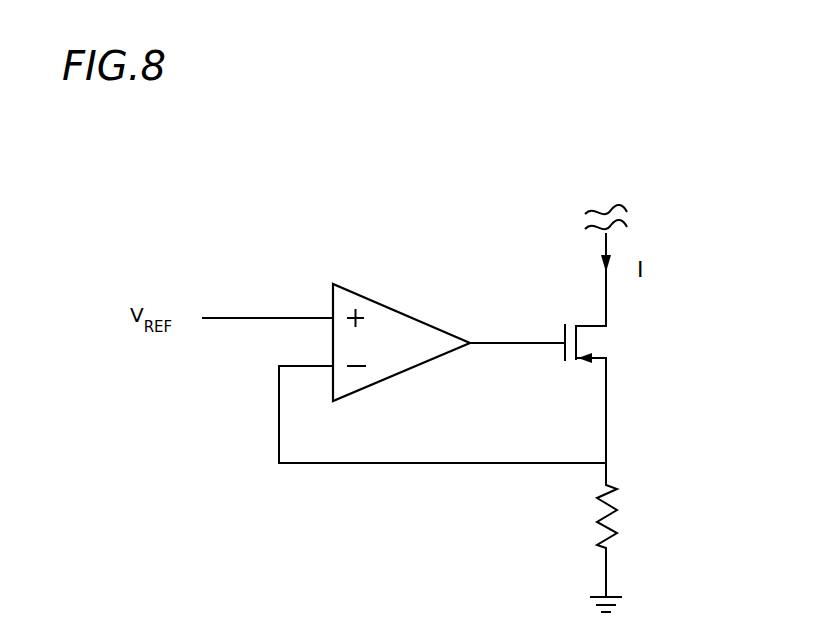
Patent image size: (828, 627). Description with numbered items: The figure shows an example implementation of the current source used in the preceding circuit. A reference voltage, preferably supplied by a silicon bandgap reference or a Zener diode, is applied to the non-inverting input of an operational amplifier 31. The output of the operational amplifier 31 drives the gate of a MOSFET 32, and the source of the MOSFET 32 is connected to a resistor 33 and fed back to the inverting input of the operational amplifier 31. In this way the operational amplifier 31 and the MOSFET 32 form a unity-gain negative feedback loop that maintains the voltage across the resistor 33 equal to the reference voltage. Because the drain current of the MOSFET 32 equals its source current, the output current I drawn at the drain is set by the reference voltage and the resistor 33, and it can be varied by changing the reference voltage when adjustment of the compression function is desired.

The operational amplifier 31 is at (400, 324).
The MOSFET 32 is at (603, 340).
The resistor 33 is at (618, 510).